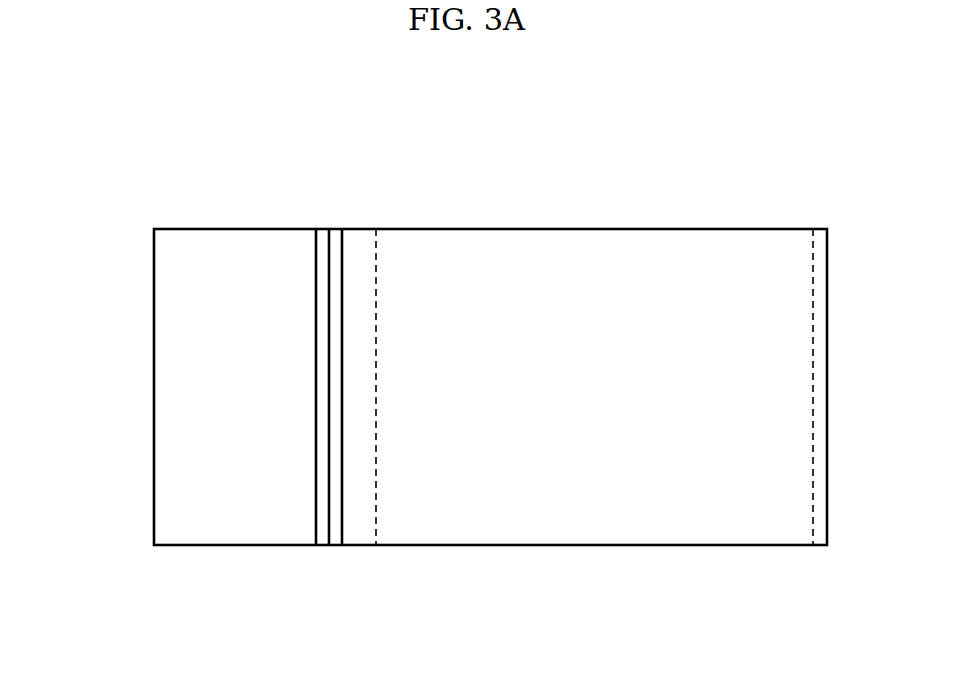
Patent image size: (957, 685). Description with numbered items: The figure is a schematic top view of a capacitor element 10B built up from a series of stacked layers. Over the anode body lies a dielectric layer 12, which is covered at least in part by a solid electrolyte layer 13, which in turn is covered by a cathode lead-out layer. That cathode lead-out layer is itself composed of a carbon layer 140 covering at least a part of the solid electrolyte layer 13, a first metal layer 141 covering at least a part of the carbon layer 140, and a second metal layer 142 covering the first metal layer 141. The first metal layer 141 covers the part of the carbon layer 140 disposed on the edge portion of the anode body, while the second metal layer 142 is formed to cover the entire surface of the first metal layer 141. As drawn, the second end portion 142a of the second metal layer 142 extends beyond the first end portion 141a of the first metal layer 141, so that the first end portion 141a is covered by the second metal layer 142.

The capacitor element 10B is at (496, 146).
The dielectric layer 12 is at (190, 243).
The solid electrolyte layer 13 is at (323, 545).
The carbon layer 140 is at (336, 545).
The second metal layer 142 is at (357, 245).
The first metal layer 141 is at (639, 295).
The first end portion 141a is at (374, 368).
The second end portion 142a is at (342, 485).